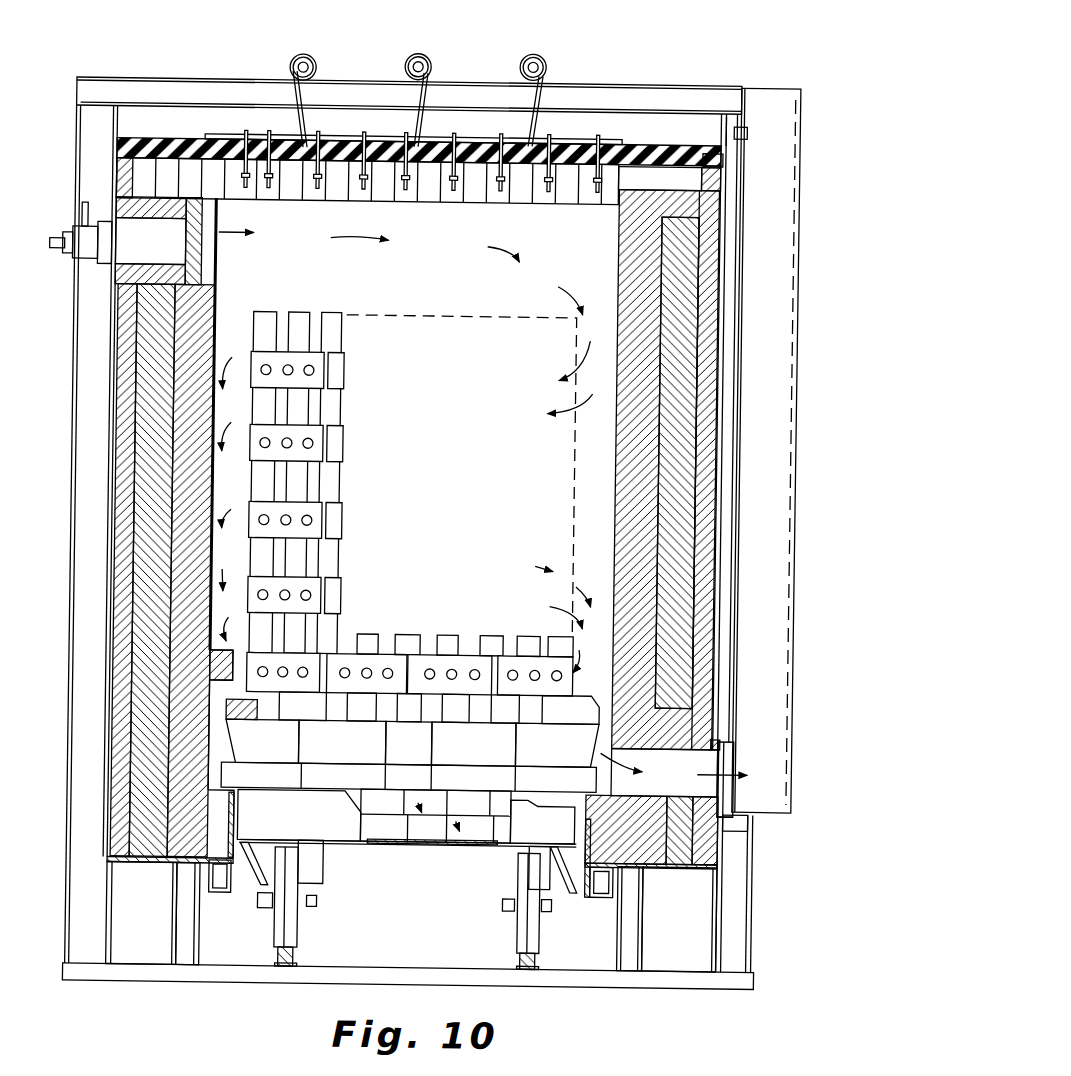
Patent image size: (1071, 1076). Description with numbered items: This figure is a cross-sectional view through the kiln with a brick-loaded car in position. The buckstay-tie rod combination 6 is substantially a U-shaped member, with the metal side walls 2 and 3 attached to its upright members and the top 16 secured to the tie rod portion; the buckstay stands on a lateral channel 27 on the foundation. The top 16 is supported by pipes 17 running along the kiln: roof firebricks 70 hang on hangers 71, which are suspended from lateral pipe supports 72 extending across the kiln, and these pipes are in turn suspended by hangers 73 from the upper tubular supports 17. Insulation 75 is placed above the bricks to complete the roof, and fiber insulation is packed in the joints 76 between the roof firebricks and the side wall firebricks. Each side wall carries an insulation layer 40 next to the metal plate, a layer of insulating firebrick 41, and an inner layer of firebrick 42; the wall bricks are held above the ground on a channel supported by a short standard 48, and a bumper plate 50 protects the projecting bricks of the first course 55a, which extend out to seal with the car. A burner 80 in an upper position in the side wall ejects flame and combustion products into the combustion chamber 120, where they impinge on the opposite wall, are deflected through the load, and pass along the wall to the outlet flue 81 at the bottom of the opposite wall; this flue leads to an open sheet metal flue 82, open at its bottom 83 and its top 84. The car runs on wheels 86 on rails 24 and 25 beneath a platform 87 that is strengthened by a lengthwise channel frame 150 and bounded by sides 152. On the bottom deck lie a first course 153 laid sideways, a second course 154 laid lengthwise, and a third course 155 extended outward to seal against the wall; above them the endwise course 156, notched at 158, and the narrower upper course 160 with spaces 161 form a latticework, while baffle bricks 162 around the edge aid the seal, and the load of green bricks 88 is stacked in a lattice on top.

The metal side wall 2 is at (106, 446).
The side wall 3 is at (758, 505).
The intermediate buckstay 6 is at (175, 90).
The top 16 is at (580, 126).
The pipes 17 is at (292, 58).
The rail 24 is at (532, 958).
The rail 25 is at (290, 955).
The lateral channel 27 is at (163, 982).
The insulation layer 40 is at (130, 640).
The insulating firebrick layer 41 is at (160, 595).
The standard firebrick layer 42 is at (202, 553).
The short standard 48 is at (186, 915).
The bumper plate 50 is at (244, 870).
The first course 55a is at (236, 652).
The firebricks 70 is at (297, 197).
The hangers 71 is at (323, 190).
The lateral pipe supports 72 is at (621, 135).
The hangers 73 is at (318, 58).
The insulation 75 is at (727, 150).
The joints 76 is at (620, 190).
The burner 80 is at (97, 265).
The outlet flue 81 is at (722, 748).
The sheet metal flue 82 is at (803, 800).
The flue bottom 83 is at (760, 814).
The flue top 84 is at (770, 84).
The wheels 86 is at (310, 930).
The platform 87 is at (427, 841).
The green bricks 88 is at (350, 515).
The combustion chamber 120 is at (405, 296).
The channel frame 150 is at (334, 870).
The sides 152 is at (295, 821).
The first course of insulating firebricks 153 is at (502, 841).
The second course of insulating firebricks 154 is at (450, 836).
The third course of insulating firebricks 155 is at (350, 780).
The endwise course 156 is at (344, 752).
The notch 158 is at (247, 732).
The upper course 160 is at (412, 700).
The spaces 161 is at (298, 700).
The baffle bricks 162 is at (584, 712).